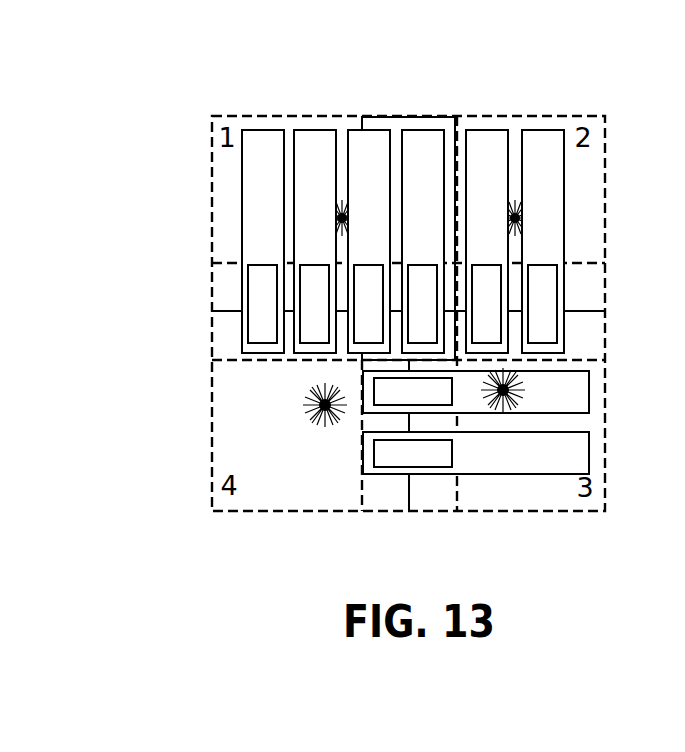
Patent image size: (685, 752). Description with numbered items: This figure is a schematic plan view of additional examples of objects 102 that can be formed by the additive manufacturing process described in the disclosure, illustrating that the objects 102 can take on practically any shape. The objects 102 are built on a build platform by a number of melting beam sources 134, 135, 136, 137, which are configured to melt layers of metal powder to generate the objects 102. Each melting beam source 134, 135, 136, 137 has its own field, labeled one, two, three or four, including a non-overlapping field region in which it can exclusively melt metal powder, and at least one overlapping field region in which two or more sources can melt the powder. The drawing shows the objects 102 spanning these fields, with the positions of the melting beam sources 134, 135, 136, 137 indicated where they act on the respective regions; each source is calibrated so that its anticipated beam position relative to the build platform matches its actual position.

The object 102 is at (542, 130).
The melting beam source 134 is at (338, 219).
The melting beam source 135 is at (520, 218).
The melting beam source 136 is at (504, 408).
The melting beam source 137 is at (316, 421).